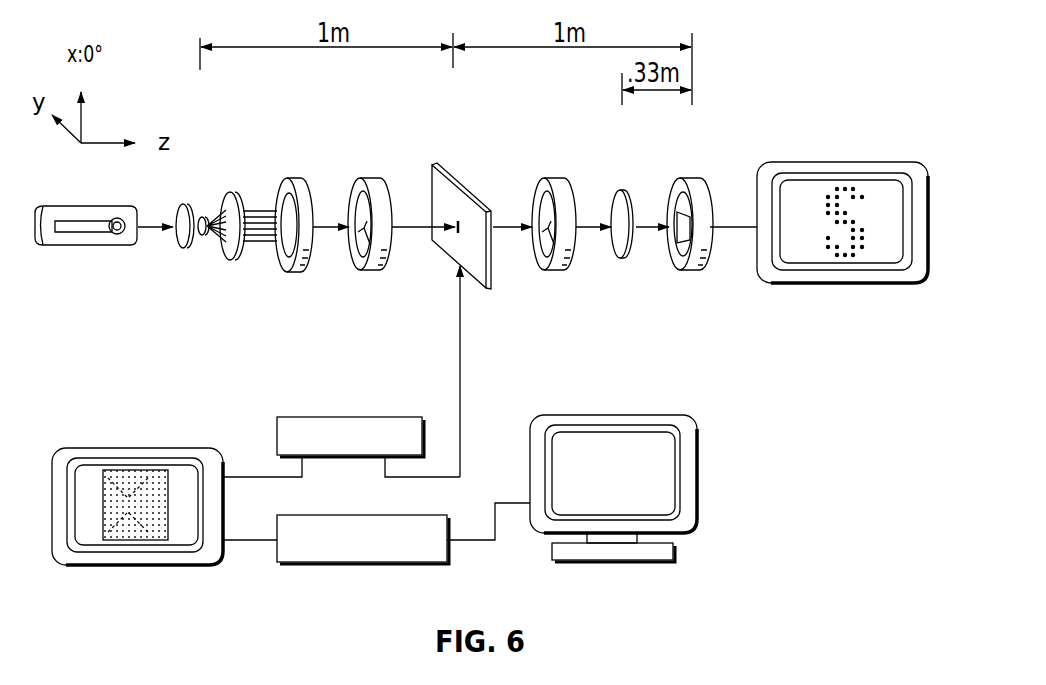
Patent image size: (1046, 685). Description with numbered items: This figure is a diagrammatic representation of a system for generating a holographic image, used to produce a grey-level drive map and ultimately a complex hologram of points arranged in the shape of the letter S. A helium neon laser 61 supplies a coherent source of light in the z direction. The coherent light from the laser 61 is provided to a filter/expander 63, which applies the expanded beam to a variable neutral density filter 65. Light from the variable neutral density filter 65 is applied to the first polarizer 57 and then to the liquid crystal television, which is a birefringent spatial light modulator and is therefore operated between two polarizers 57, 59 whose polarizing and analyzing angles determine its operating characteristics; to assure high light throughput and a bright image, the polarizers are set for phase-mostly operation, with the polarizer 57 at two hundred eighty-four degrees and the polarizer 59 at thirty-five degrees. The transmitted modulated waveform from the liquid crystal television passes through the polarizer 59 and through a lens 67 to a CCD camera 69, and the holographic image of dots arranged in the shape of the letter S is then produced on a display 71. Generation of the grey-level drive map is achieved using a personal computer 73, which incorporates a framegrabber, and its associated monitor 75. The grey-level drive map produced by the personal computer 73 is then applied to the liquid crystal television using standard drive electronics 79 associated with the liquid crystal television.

The helium neon laser 61 is at (73, 205).
The filter/expander 63 is at (209, 199).
The variable neutral density filter (VNDF) 65 is at (293, 180).
The polarizer 57 is at (368, 180).
The polarizer 59 is at (470, 195).
The lens 67 is at (622, 190).
The CCD camera 69 is at (688, 177).
The display 71 is at (851, 162).
The Epson drive electronics 79 is at (322, 417).
The personal computer (PC) 73 is at (325, 565).
The monitor 75 is at (618, 415).